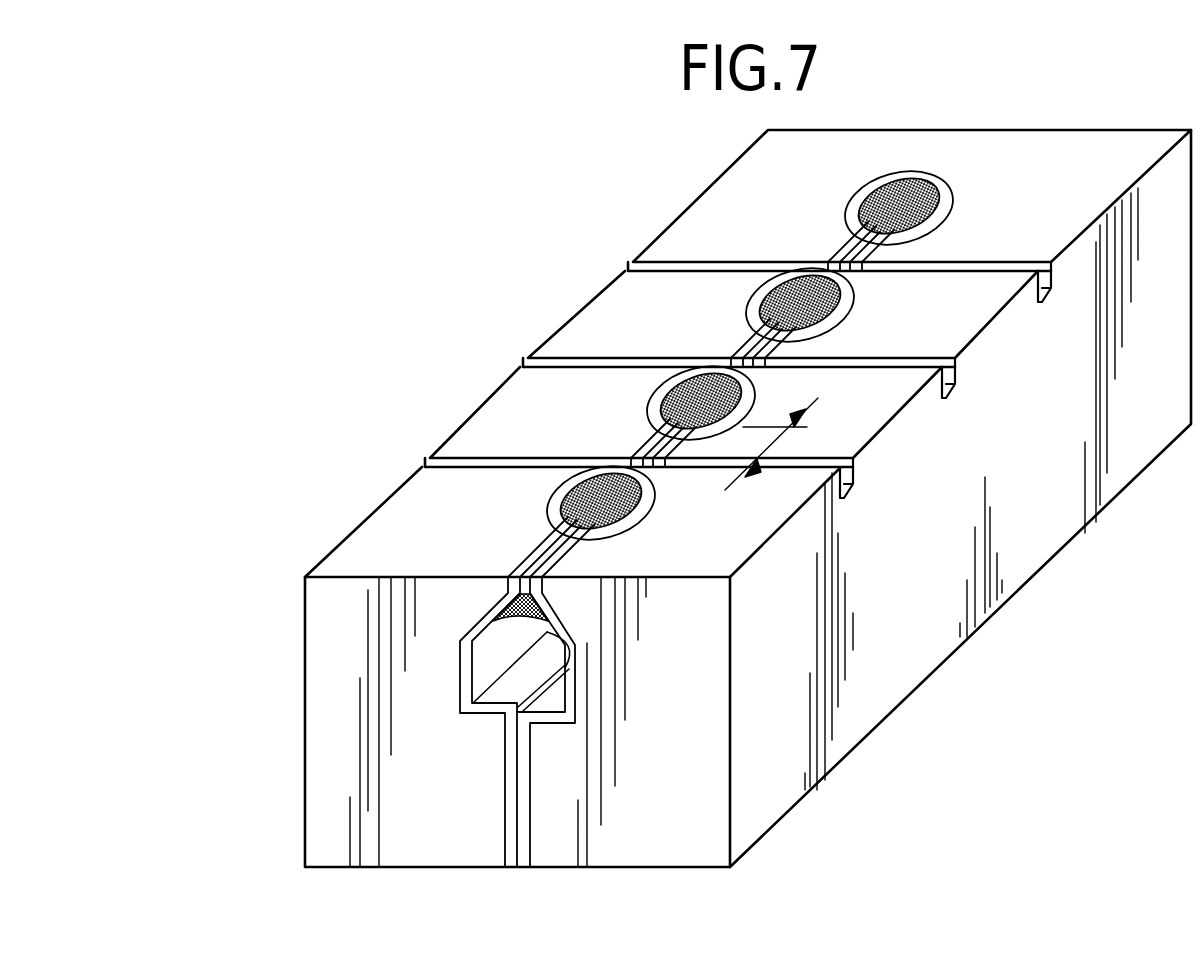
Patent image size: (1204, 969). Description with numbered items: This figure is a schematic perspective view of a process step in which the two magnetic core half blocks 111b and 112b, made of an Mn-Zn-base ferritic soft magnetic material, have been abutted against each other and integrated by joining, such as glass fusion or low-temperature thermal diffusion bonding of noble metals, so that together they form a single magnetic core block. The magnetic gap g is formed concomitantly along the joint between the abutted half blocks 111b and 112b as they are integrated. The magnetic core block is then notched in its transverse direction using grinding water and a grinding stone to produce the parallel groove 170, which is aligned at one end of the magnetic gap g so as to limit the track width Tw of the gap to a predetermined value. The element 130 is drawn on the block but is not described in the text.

The pad electrode 130 is at (755, 306).
The magnetic gap g is at (840, 258).
The parallel groove 170 is at (1005, 268).
The track width Tw is at (788, 444).
The magnetic core half block 112b is at (337, 790).
The magnetic core half block 111b is at (715, 800).